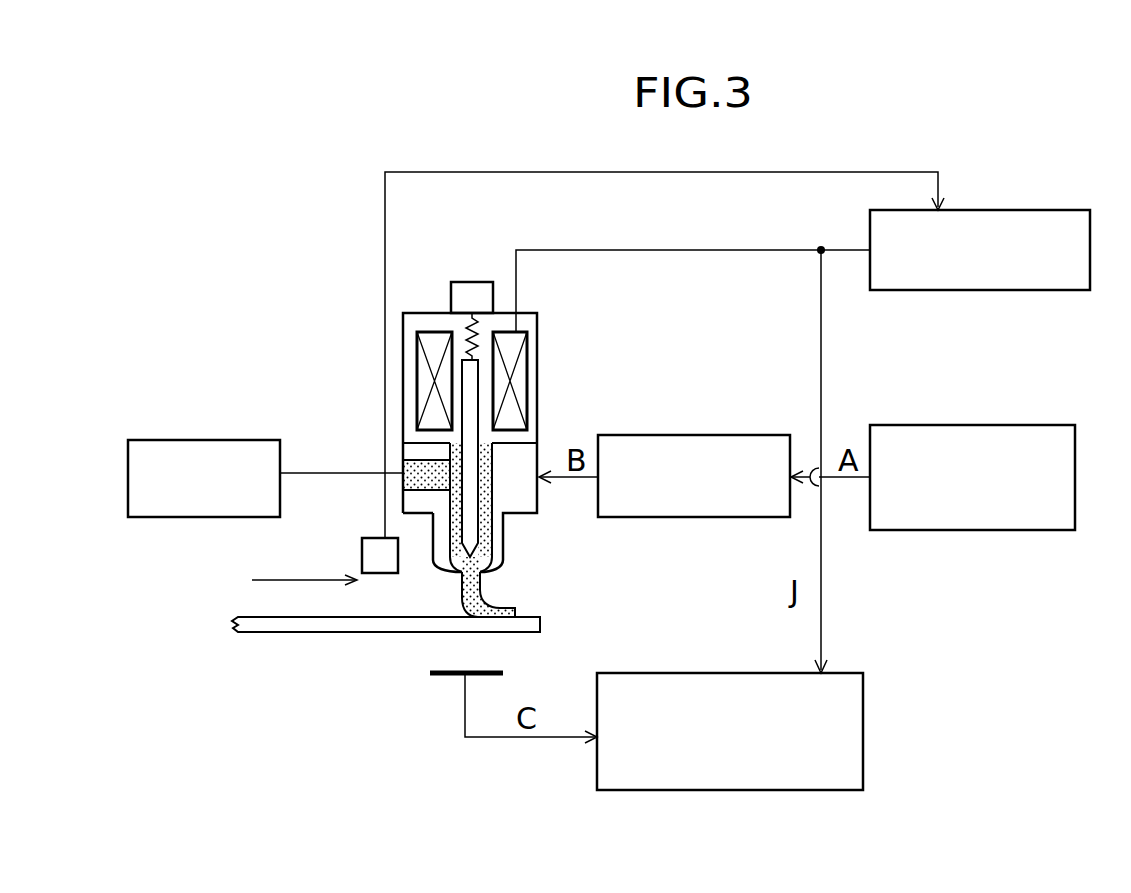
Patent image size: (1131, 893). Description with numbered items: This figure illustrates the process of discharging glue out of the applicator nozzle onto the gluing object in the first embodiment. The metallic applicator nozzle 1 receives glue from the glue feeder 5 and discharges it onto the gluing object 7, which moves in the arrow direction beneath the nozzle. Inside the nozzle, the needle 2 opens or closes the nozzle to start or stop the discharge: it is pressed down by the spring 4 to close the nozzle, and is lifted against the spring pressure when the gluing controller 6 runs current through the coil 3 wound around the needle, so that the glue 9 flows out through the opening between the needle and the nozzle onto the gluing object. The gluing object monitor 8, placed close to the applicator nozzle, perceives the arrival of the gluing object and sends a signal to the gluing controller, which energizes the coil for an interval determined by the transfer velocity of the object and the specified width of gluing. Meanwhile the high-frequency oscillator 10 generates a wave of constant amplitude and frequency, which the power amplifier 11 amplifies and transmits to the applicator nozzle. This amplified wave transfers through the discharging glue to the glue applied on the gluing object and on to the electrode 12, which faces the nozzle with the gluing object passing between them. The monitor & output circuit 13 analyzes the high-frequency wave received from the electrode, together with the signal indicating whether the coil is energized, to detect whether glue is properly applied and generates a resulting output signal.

The applicator nozzle 1 is at (418, 256).
The needle 2 is at (470, 540).
The coil 3 is at (527, 365).
The spring 4 is at (470, 325).
The glue feeder 5 is at (262, 440).
The gluing controller 6 is at (1045, 209).
The gluing object 7 is at (270, 634).
The gluing object monitor 8 is at (362, 548).
The glue 9 is at (485, 605).
The high-frequency oscillator 10 is at (1043, 425).
The power amplifier 11 is at (744, 435).
The electrode 12 is at (438, 680).
The monitor & output circuit 13 is at (730, 673).